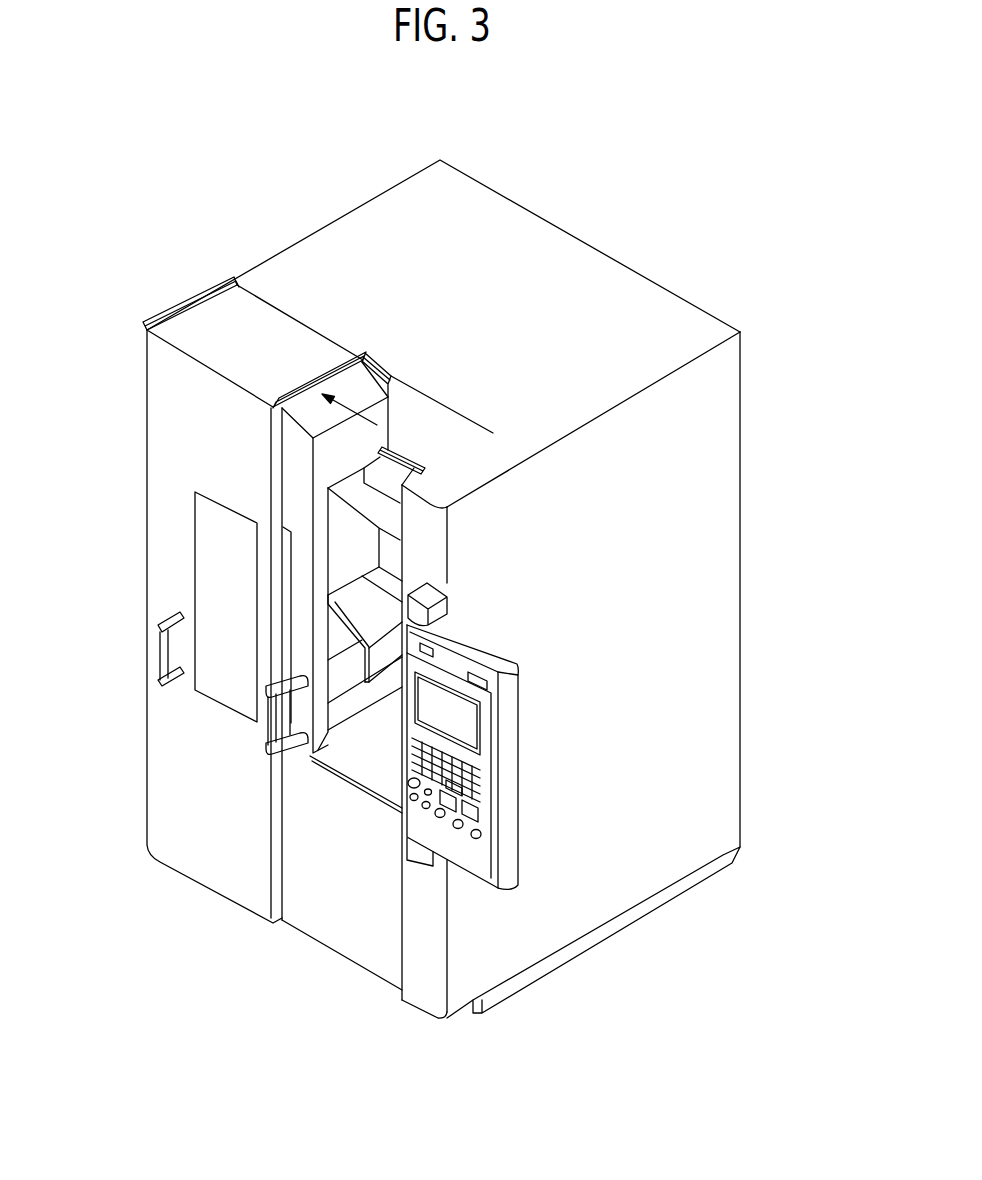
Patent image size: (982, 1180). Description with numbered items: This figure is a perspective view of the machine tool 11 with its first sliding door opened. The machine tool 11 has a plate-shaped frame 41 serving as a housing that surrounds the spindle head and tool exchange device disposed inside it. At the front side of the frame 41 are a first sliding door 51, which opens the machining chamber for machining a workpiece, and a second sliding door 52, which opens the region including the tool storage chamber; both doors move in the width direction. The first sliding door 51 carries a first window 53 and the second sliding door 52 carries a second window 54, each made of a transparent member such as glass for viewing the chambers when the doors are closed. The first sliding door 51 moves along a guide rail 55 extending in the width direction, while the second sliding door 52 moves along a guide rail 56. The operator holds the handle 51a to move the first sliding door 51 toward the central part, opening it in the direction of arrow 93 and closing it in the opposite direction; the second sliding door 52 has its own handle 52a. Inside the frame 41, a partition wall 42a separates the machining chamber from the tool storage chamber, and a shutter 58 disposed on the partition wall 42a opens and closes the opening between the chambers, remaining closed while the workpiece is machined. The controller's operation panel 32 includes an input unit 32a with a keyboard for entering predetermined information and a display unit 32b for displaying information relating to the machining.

The machine tool 11 is at (649, 204).
The operation panel 32 is at (483, 767).
The input unit 32a is at (483, 817).
The display unit 32b is at (455, 712).
The frame 41 is at (683, 621).
The partition wall 42a is at (363, 553).
The first sliding door 51 is at (295, 477).
The handle 51a is at (293, 760).
The second sliding door 52 is at (178, 398).
The handle 52a is at (158, 652).
The first window 53 is at (288, 558).
The second window 54 is at (222, 527).
The guide rail 55 is at (407, 465).
The guide rail 56 is at (383, 390).
The shutter 58 is at (360, 610).
The arrow 93 is at (348, 405).